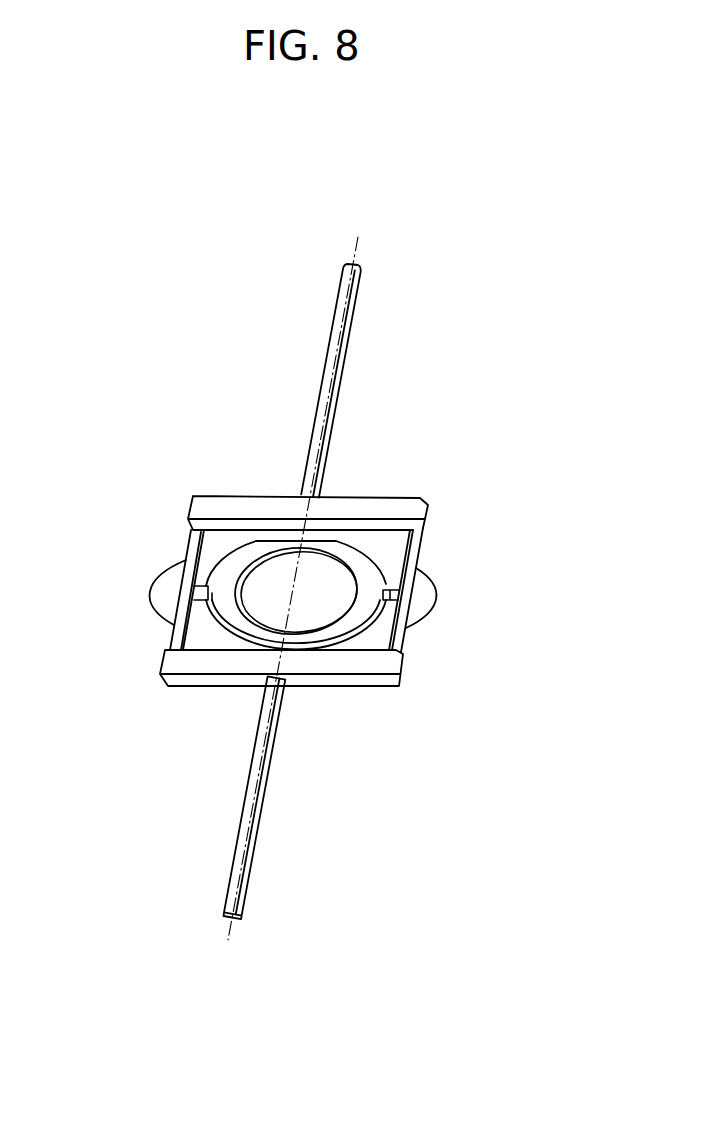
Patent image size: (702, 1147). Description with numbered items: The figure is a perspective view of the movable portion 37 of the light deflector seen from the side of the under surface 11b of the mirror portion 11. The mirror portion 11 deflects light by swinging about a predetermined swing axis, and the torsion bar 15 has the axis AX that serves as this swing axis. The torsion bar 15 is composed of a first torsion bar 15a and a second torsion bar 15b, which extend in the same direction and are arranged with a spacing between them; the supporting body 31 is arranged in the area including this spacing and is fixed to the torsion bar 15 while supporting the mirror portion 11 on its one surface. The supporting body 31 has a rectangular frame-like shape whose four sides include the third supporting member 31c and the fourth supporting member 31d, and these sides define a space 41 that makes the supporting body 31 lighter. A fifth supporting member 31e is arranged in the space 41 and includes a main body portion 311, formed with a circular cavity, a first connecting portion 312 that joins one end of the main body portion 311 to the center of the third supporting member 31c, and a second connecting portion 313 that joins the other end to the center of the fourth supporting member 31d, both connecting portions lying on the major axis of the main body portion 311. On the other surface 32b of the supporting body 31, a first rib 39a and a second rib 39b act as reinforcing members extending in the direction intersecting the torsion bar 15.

The mirror portion 11 is at (335, 585).
The under surface 11b is at (420, 597).
The torsion bar 15 is at (254, 588).
The first torsion bar 15a is at (335, 318).
The second torsion bar 15b is at (238, 871).
The supporting body 31 is at (292, 586).
The third supporting member 31c is at (407, 636).
The fourth supporting member 31d is at (183, 637).
The fifth supporting member 31e is at (332, 690).
The main body portion 311 is at (323, 632).
The first connecting portion 312 is at (389, 601).
The second connecting portion 313 is at (208, 601).
The other surface 32b is at (290, 480).
The movable portion 37 is at (497, 257).
The first rib 39a is at (218, 510).
The second rib 39b is at (190, 665).
The space 41 is at (218, 540).
The axis AX is at (228, 960).